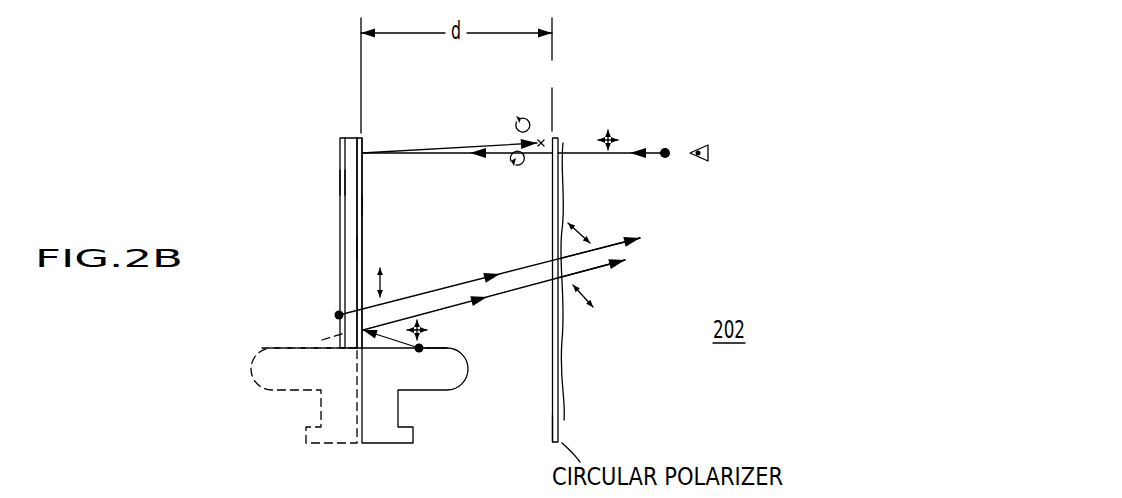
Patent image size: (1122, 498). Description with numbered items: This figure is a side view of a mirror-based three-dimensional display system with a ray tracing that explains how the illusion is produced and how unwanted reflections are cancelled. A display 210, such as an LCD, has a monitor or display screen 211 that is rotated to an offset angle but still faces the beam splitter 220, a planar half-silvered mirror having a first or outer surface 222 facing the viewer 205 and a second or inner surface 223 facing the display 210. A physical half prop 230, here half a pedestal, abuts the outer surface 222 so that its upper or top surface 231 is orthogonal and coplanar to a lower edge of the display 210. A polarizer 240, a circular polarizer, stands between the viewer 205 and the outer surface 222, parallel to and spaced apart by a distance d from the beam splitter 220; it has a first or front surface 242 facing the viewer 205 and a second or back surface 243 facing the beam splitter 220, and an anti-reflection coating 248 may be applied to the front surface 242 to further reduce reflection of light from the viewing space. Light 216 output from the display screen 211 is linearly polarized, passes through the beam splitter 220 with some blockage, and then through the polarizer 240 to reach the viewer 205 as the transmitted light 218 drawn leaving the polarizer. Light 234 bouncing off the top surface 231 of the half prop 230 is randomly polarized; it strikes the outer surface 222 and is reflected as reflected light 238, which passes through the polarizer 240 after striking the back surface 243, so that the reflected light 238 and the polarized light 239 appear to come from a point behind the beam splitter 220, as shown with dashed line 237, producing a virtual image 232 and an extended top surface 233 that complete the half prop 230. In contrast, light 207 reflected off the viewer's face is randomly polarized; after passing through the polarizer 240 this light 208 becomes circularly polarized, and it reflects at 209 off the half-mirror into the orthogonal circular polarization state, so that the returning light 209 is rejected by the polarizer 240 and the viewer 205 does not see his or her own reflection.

The viewer 205 is at (727, 138).
The light reflected off the viewer's face 207 is at (582, 153).
The circularly polarized light 208 is at (433, 153).
The reflected light 209 is at (437, 148).
The display 210 is at (340, 148).
The monitor/display screen 211 is at (349, 190).
The light output from the monitor/display screen 216 is at (413, 297).
The transmitted light ray 218 is at (607, 247).
The beam splitter 220 is at (433, 107).
The first or outer surface 222 is at (363, 205).
The second or inner surface 223 is at (357, 252).
The physical half prop 230 is at (415, 466).
The upper or top surface 231 is at (437, 348).
The virtual image of the half prop 232 is at (256, 398).
The extended top surface 233 is at (262, 346).
The light bouncing off the half prop 234 is at (397, 342).
The dashed line 237 is at (322, 340).
The reflected light 238 is at (510, 293).
The polarized light 239 is at (593, 268).
The polarizer 240 is at (558, 74).
The first or front surface 242 is at (563, 143).
The second or back surface 243 is at (552, 428).
The anti-reflection coating 248 is at (565, 420).